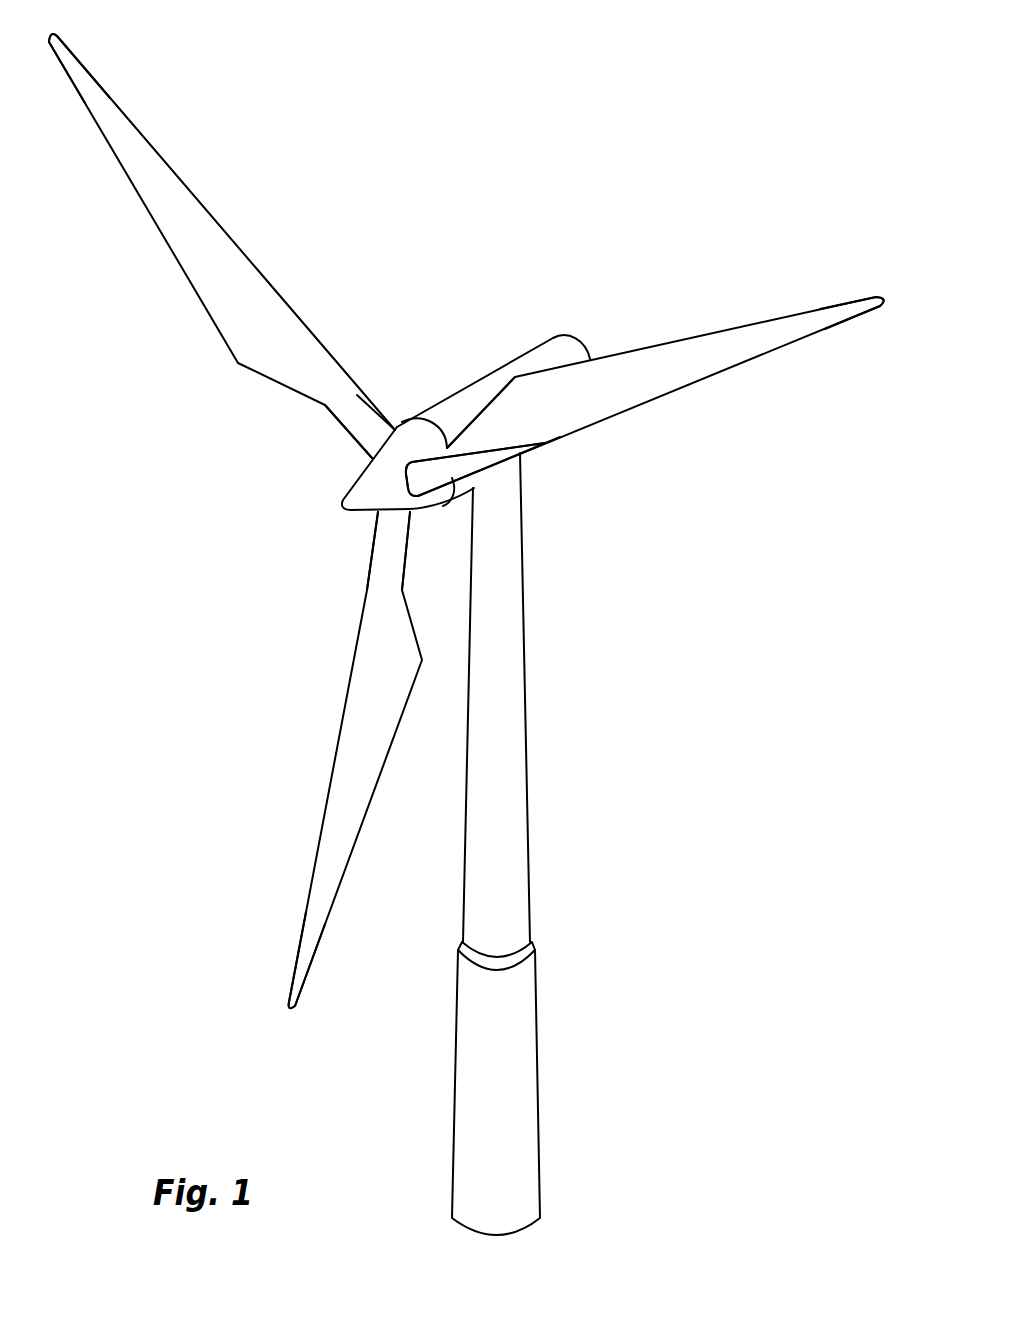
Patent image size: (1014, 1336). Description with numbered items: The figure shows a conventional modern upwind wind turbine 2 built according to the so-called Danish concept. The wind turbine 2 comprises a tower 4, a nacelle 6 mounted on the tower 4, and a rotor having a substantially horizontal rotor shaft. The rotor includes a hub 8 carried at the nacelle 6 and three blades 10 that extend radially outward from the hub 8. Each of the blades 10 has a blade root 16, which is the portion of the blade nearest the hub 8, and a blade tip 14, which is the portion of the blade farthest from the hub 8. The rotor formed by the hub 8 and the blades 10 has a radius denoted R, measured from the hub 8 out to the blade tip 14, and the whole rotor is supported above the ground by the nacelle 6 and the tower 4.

The wind turbine 2 is at (625, 782).
The tower 4 is at (513, 705).
The nacelle 6 is at (460, 402).
The hub 8 is at (367, 487).
The blades 10 is at (253, 337).
The blade tip 14 is at (97, 89).
The blade root 16 is at (373, 442).